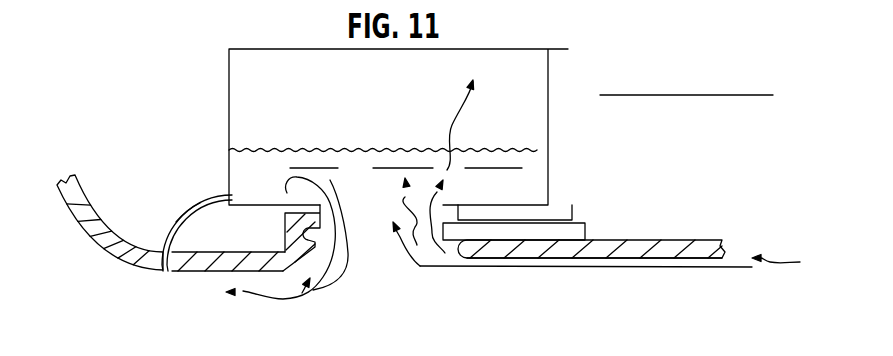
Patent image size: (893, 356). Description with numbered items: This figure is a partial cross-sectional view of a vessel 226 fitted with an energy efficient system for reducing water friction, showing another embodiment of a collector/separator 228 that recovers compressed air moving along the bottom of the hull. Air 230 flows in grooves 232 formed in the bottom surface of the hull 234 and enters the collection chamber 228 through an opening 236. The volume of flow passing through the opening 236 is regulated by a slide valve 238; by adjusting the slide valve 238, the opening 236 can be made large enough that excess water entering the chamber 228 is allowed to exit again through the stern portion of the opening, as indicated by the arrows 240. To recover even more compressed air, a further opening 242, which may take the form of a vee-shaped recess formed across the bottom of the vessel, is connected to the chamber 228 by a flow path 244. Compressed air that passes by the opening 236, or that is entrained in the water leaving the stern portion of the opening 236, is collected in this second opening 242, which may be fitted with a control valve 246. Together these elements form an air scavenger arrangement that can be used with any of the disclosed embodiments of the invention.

The vessel 226 is at (578, 88).
The collector/separator 228 is at (512, 49).
The air 230 is at (421, 266).
The grooves 232 is at (697, 258).
The hull 234 is at (660, 240).
The opening 236 is at (374, 252).
The slide valve 238 is at (588, 223).
The arrows 240 is at (303, 291).
The opening 242 is at (168, 273).
The flow path 244 is at (203, 195).
The control valve 246 is at (176, 222).